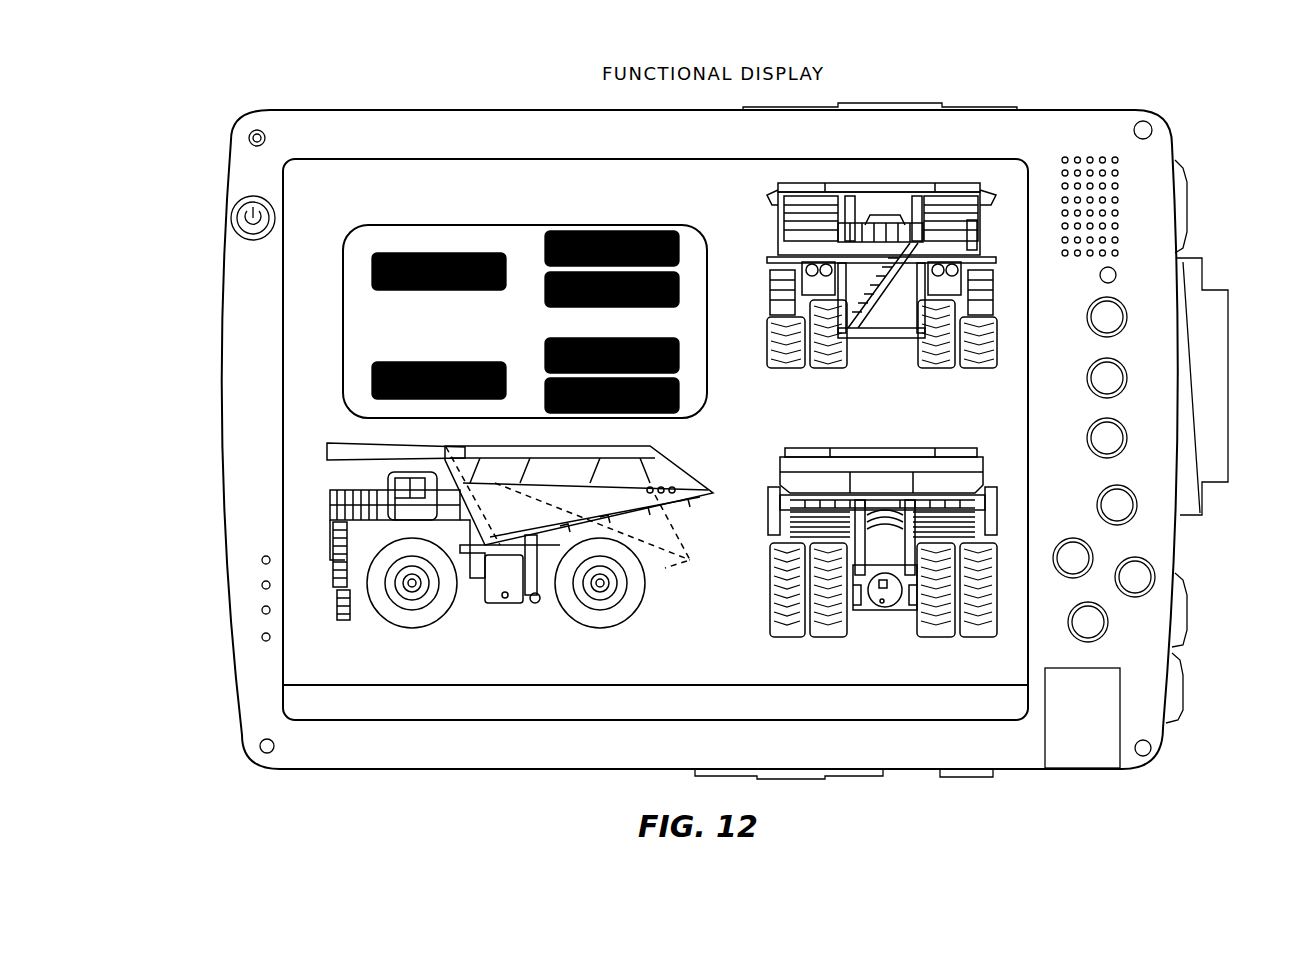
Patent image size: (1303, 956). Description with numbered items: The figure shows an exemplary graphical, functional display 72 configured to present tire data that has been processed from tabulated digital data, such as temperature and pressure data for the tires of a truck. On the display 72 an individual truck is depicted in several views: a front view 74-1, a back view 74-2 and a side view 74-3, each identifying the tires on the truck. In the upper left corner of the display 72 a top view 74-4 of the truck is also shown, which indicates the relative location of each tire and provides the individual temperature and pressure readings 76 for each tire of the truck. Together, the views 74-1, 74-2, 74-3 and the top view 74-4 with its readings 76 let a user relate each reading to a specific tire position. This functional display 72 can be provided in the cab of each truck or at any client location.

The graphical functional display 72 is at (1187, 143).
The front view 74-1 is at (932, 183).
The back view 74-2 is at (960, 670).
The side view 74-3 is at (508, 633).
The top view 74-4 is at (325, 309).
The temperature and pressure readings 76 is at (412, 240).